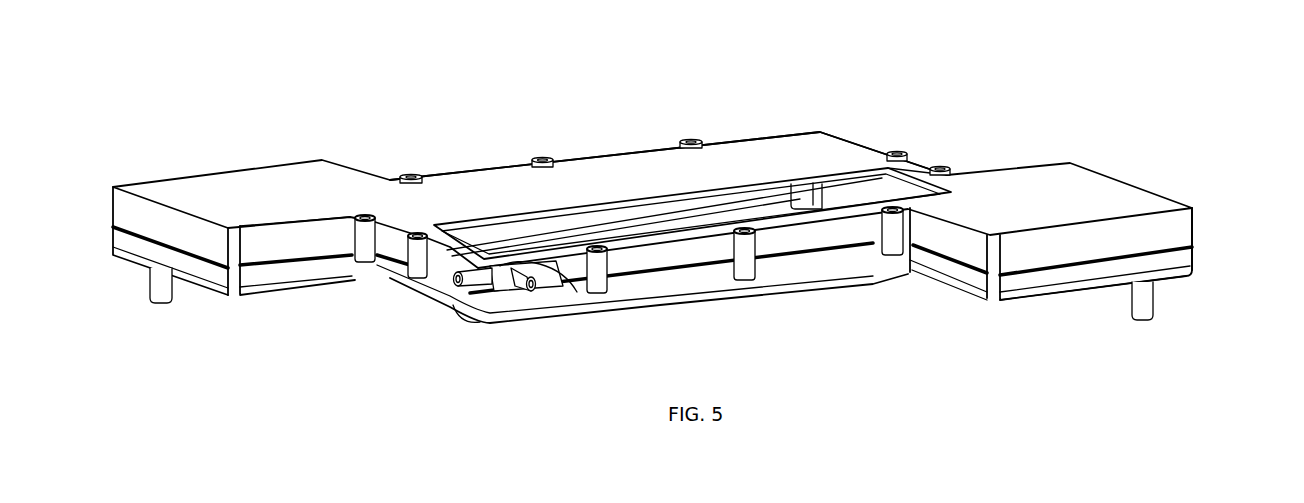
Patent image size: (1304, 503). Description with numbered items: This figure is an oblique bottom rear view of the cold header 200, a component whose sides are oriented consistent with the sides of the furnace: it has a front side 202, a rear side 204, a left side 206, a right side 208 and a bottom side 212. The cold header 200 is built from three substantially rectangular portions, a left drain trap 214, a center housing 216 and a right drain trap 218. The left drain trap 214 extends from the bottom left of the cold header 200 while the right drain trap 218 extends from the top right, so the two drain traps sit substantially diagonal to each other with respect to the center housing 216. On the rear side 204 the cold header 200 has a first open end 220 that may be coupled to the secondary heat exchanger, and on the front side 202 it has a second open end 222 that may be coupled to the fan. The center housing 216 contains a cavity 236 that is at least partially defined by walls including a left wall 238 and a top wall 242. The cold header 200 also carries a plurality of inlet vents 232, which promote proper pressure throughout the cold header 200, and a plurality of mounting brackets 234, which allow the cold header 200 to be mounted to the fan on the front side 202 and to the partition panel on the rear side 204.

The cold header 200 is at (655, 221).
The front side 202 is at (847, 337).
The rear side 204 is at (460, 106).
The left side 206 is at (1228, 220).
The right side 208 is at (88, 233).
The bottom side 212 is at (1110, 346).
The left drain trap 214 is at (1170, 155).
The center housing 216 is at (626, 168).
The right drain trap 218 is at (210, 166).
The first open end 220 is at (783, 213).
The second open end 222 is at (530, 320).
The inlet vents 232 is at (150, 284).
The mounting brackets 234 is at (410, 173).
The cavity 236 is at (530, 237).
The left wall 238 is at (855, 188).
The top wall 242 is at (740, 198).